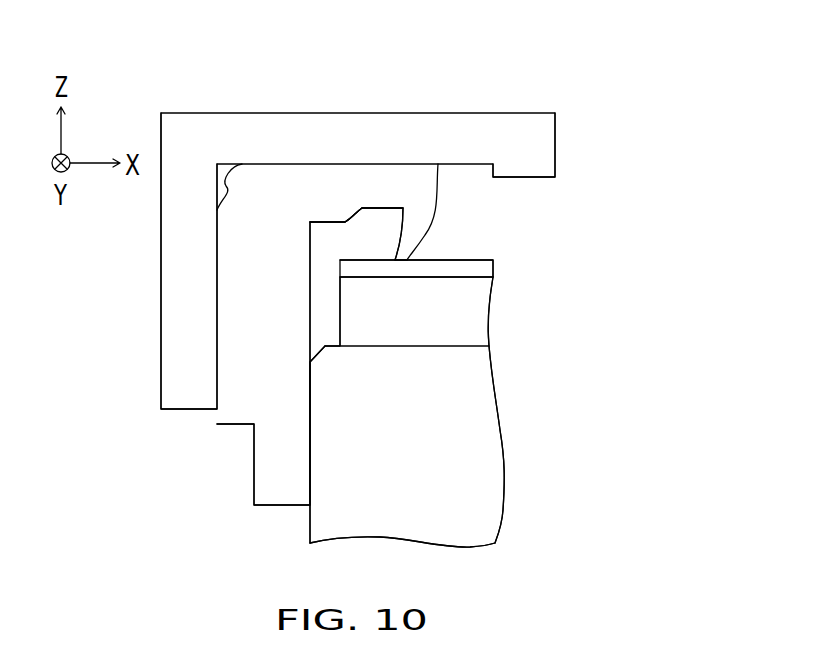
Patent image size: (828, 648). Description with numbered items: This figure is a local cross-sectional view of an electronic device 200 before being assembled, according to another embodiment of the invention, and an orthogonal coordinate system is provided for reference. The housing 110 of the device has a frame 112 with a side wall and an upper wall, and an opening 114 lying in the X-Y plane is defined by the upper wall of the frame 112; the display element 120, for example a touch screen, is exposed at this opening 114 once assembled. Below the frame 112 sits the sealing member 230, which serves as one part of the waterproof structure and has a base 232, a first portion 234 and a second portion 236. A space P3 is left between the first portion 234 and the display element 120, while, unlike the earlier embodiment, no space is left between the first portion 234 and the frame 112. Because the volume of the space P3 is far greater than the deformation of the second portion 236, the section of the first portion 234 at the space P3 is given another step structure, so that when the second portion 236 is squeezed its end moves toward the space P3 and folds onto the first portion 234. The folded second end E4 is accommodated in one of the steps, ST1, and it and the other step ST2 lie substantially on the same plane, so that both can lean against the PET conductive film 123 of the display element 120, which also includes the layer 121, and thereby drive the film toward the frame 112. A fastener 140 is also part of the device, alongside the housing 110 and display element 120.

The housing 110 is at (225, 82).
The frame 112 is at (208, 112).
The opening 114 is at (558, 143).
The display element 120 is at (600, 297).
The frame of display module 121 is at (485, 312).
The PET conductive film 123 is at (488, 269).
The fastener 140 is at (493, 460).
The electronic device 200 is at (657, 575).
The sealing member 230 is at (230, 501).
The base 232 is at (235, 367).
The first portion 234 is at (330, 193).
The second portion 236 is at (422, 213).
The other step ST2 is at (327, 223).
The space P3 is at (352, 243).
The step structure ST1 is at (393, 208).
The folded second end E4 is at (401, 274).